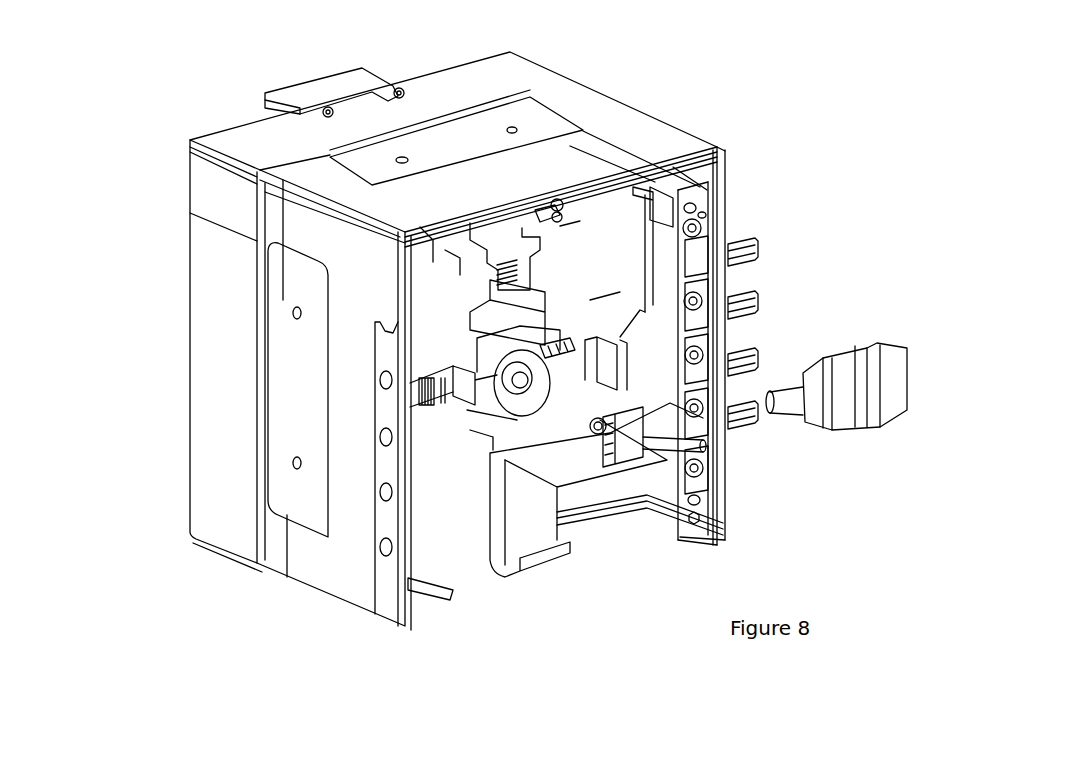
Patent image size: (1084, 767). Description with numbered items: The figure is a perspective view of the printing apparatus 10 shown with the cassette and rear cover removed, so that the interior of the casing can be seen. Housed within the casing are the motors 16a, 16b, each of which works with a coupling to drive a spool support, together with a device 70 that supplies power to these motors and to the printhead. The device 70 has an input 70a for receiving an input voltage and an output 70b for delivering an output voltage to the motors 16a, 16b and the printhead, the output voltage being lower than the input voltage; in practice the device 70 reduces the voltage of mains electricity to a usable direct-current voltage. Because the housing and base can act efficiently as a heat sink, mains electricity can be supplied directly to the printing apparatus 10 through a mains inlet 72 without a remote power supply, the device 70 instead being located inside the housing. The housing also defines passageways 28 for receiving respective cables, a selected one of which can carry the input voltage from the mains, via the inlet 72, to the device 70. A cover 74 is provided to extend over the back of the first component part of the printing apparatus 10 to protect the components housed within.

The printing apparatus 10 is at (730, 96).
The motor 16a is at (421, 270).
The motor 16b is at (601, 225).
The passageways 28 is at (748, 422).
The device 70 is at (598, 495).
The input 70a is at (652, 461).
The output 70b is at (627, 337).
The mains inlet 72 is at (843, 273).
The cover 74 is at (345, 587).